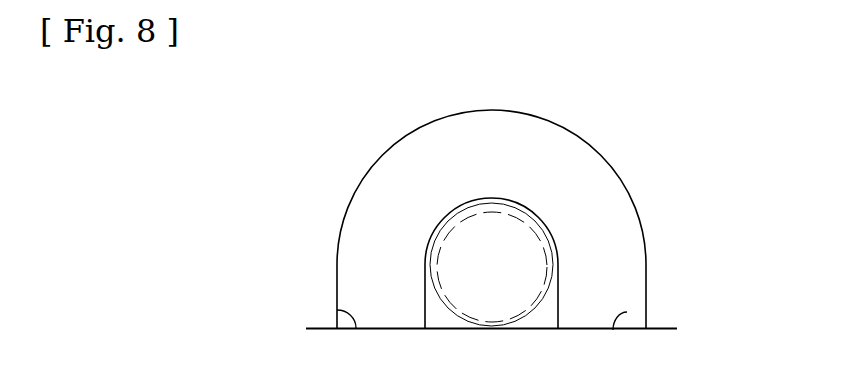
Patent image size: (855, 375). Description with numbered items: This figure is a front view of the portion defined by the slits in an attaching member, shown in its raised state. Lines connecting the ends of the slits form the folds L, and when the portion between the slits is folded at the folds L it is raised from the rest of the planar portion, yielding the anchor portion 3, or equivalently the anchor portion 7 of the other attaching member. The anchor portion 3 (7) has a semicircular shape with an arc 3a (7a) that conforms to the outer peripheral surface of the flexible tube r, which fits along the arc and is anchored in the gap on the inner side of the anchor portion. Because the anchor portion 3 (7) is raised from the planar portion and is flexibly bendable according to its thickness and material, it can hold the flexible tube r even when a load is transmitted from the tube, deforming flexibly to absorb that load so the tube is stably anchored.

The anchor portion 3 is at (638, 245).
The anchor portion 7 is at (536, 219).
The arc 3a is at (507, 208).
The arc 7a is at (568, 242).
The flexible tube r is at (425, 265).
The folds L is at (337, 310).